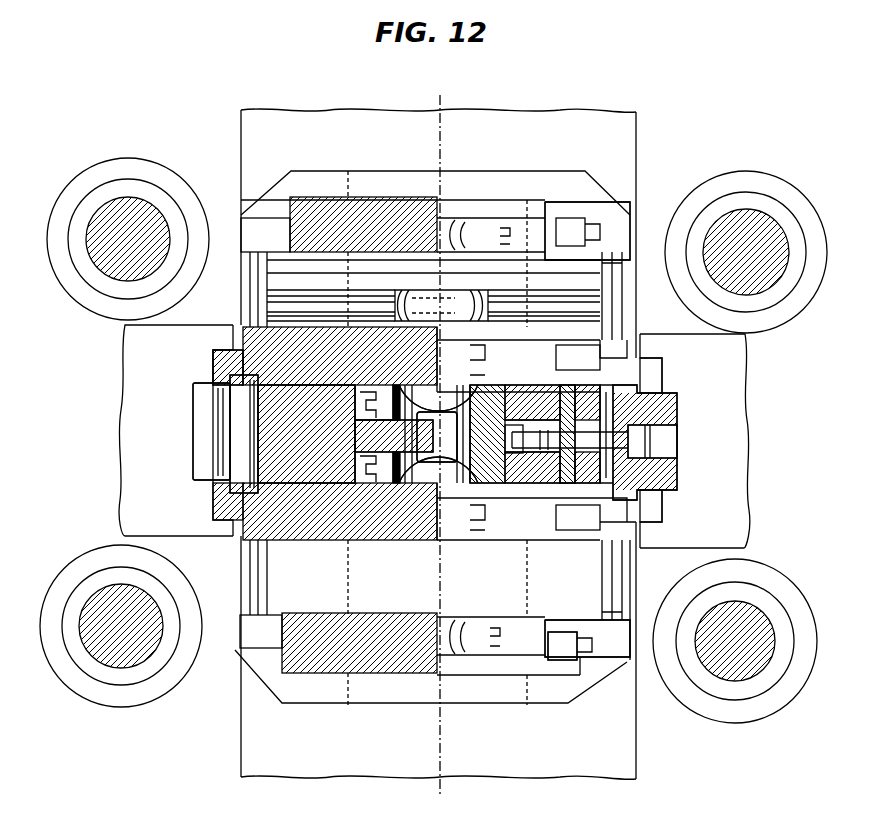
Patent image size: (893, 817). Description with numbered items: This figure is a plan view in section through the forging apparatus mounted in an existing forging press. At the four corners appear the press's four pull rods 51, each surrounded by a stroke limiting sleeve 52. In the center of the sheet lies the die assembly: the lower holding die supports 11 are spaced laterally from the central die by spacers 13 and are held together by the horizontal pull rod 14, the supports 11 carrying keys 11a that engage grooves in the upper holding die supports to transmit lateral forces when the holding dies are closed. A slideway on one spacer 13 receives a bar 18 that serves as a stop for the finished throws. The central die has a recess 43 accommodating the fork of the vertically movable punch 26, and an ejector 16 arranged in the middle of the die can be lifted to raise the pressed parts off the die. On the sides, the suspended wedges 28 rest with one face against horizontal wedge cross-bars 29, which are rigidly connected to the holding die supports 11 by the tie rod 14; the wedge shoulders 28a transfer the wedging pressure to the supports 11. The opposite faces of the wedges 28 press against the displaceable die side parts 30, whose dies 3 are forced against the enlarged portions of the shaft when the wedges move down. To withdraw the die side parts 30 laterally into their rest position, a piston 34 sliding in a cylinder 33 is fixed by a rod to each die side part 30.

The die 3 is at (383, 392).
The lower holding die support 11 is at (578, 212).
The key 11a is at (560, 632).
The spacer 13 is at (595, 318).
The horizontal pull rod 14 is at (622, 292).
The ejector 16 is at (445, 478).
The bar 18 is at (448, 300).
The vertically movable punch 26 is at (356, 436).
The suspended wedge 28 is at (305, 483).
The wedge shoulder 28a is at (258, 455).
The horizontal wedge cross-bar 29 is at (200, 398).
The displaceable die side part 30 is at (350, 392).
The cylinder 33 is at (672, 446).
The piston 34 is at (640, 428).
The recess 43 is at (425, 483).
The pull rod 51 is at (160, 265).
The stroke limiting sleeve 52 is at (160, 192).